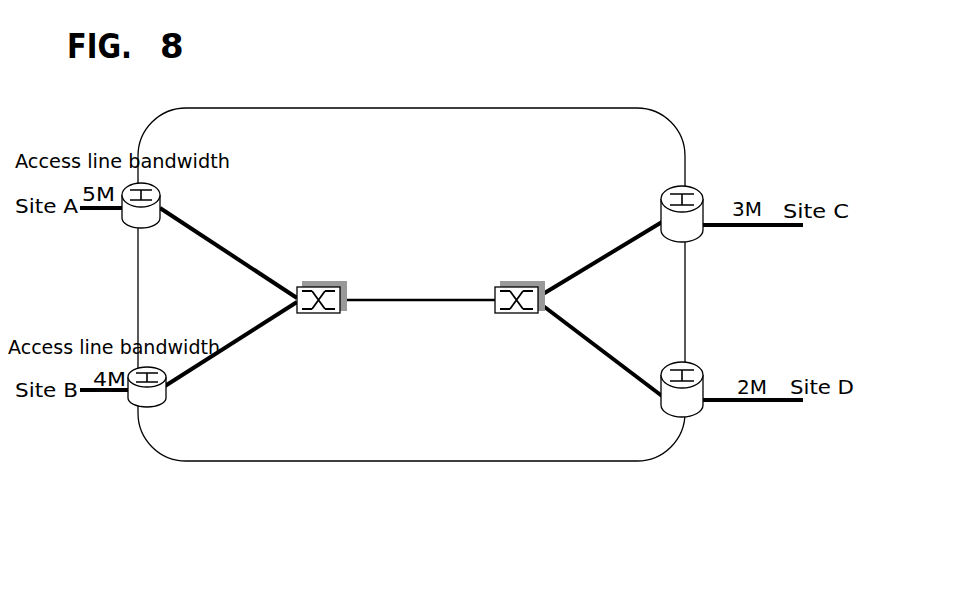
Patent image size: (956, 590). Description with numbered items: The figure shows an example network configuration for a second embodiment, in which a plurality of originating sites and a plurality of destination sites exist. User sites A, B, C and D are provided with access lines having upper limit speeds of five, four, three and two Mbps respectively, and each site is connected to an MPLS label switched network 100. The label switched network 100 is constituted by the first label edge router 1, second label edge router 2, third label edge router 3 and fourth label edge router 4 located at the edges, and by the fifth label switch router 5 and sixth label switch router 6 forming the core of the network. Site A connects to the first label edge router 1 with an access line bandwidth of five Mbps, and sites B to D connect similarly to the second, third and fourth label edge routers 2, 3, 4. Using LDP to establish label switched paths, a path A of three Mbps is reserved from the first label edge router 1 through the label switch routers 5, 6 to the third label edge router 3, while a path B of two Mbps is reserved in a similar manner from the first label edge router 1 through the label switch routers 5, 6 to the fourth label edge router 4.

The label switched network 100 is at (527, 462).
The LER1 1 is at (171, 203).
The LER2 2 is at (173, 399).
The LER3 3 is at (658, 199).
The LER4 4 is at (650, 397).
The LSR5 5 is at (321, 284).
The LSR6 6 is at (505, 284).